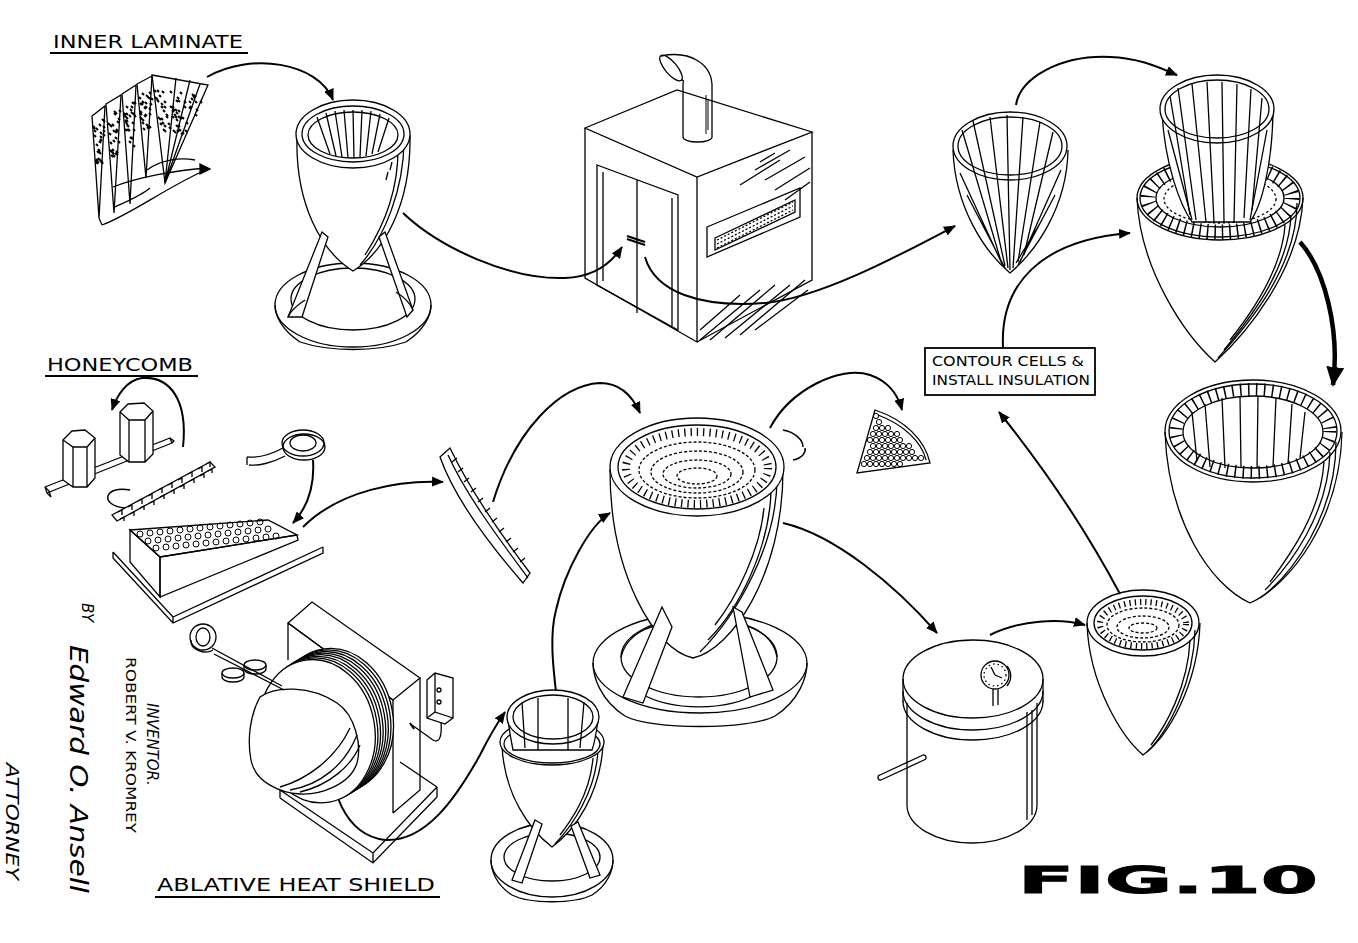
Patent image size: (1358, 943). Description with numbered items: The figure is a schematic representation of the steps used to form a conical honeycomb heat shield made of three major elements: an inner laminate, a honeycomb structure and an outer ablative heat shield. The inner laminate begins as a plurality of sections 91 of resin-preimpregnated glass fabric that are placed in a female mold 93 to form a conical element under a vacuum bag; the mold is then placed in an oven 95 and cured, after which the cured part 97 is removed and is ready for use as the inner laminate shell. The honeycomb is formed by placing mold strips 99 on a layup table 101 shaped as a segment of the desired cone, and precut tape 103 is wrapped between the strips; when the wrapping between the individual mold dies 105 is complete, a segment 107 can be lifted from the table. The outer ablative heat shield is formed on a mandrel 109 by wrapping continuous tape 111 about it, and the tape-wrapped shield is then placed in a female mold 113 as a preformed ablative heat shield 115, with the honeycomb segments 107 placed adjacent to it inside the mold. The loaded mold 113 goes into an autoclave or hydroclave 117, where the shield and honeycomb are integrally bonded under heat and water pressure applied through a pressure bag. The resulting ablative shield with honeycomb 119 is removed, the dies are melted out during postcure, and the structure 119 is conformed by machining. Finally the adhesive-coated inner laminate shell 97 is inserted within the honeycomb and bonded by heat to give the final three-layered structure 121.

The inner laminate sections 91 is at (200, 169).
The female mold 93 is at (403, 193).
The oven 95 is at (808, 168).
The cured part 97 is at (1067, 150).
The mold strips 99 is at (200, 462).
The layup table 101 is at (278, 577).
The precut tape 103 is at (313, 428).
The mold dies 105 is at (88, 425).
The honeycomb segment 107 is at (478, 535).
The mandrel 109 is at (270, 733).
The continuous tape 111 is at (230, 643).
The female mold 113 is at (777, 513).
The preformed ablative heat shield 115 is at (530, 693).
The autoclave or hydroclave 117 is at (915, 808).
The ablative shield with honeycomb structure 119 is at (1238, 355).
The three-layered structure 121 is at (1187, 521).